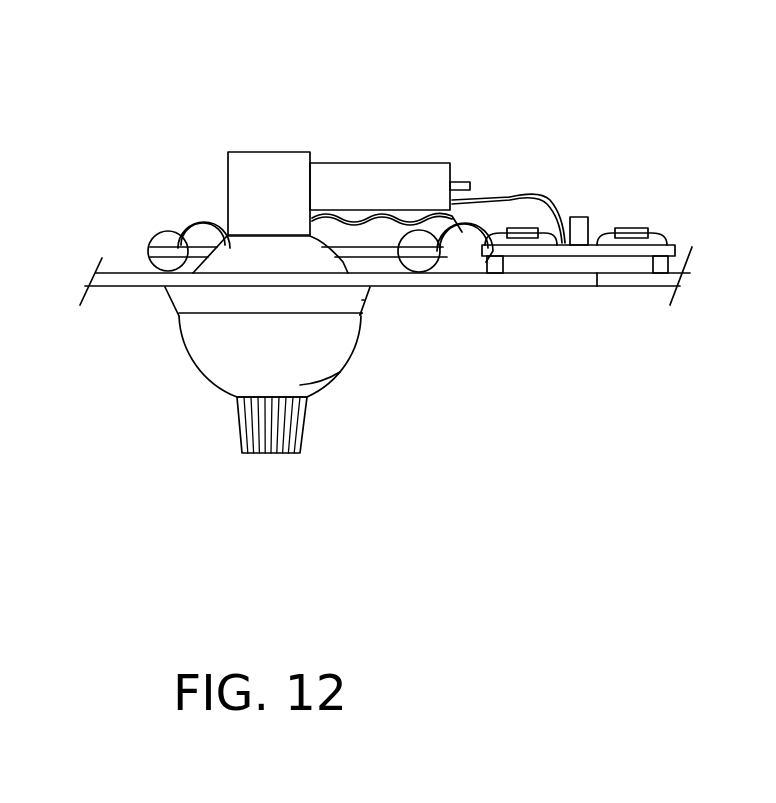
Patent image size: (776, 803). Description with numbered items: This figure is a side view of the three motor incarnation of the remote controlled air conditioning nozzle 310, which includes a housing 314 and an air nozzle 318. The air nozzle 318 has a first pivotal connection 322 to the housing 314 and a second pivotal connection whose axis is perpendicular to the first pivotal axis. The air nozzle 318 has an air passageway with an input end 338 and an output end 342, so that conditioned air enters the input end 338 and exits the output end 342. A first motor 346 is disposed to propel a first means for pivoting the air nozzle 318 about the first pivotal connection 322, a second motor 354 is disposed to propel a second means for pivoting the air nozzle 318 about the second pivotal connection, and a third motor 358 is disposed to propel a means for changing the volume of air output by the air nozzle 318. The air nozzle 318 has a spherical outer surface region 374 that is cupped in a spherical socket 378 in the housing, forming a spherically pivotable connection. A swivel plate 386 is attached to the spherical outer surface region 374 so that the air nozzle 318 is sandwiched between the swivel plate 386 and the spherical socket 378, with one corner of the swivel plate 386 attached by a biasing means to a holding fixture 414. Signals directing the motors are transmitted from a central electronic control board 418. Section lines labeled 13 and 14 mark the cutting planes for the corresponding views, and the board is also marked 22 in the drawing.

The section line 13- 13 is at (468, 576).
The section line 14- 14 is at (105, 0).
The circuit board 22 is at (513, 286).
The remote controlled air conditioning nozzle 310 is at (103, 287).
The housing 314 is at (363, 300).
The air nozzle 318 is at (330, 380).
The first pivotal connection 322 is at (362, 315).
The input end 338 is at (278, 152).
The output end 342 is at (270, 453).
The first motor 346 is at (157, 240).
The second motor 354 is at (462, 286).
The third motor 358 is at (332, 163).
The spherical outer surface region 374 is at (213, 380).
The spherical socket 378 is at (173, 305).
The swivel plate 386 is at (180, 243).
The holding fixture 414 is at (598, 286).
The central electronic control board 418 is at (673, 245).